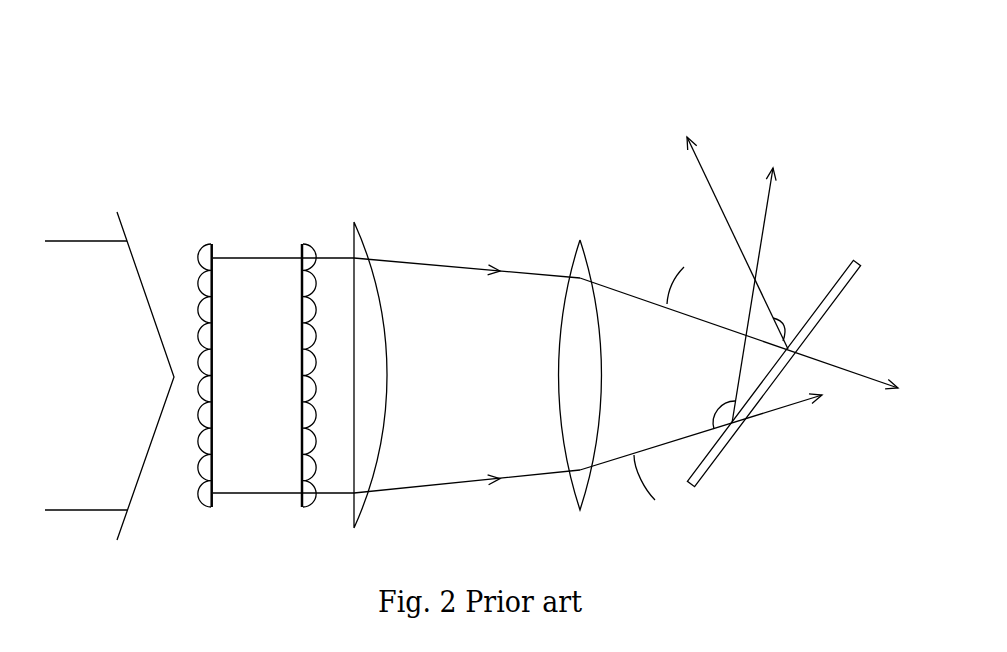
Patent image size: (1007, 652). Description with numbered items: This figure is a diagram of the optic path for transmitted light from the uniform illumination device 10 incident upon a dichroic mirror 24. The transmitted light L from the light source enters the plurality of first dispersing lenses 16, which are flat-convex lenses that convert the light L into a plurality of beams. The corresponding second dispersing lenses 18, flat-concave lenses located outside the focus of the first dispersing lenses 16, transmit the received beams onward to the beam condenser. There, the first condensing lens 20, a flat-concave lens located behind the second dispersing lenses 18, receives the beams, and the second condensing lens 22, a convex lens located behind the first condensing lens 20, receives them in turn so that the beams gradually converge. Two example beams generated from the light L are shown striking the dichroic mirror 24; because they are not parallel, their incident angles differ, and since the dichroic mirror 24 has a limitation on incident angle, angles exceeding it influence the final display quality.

The uniform illumination device 10 is at (318, 110).
The transmitted light L is at (72, 252).
The first dispersing lenses 16 is at (203, 249).
The second dispersing lenses 18 is at (312, 247).
The first condensing lens 20 is at (357, 233).
The second condensing lens 22 is at (573, 262).
The dichroic mirror 24 is at (843, 268).